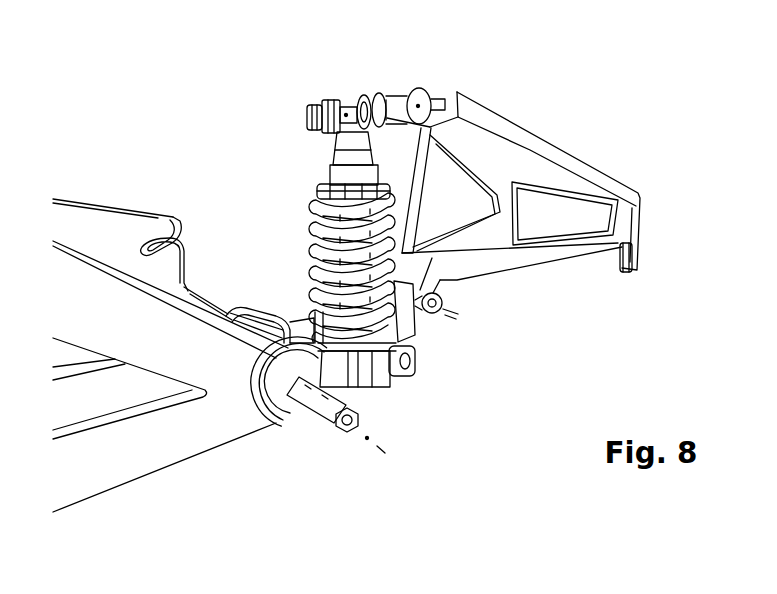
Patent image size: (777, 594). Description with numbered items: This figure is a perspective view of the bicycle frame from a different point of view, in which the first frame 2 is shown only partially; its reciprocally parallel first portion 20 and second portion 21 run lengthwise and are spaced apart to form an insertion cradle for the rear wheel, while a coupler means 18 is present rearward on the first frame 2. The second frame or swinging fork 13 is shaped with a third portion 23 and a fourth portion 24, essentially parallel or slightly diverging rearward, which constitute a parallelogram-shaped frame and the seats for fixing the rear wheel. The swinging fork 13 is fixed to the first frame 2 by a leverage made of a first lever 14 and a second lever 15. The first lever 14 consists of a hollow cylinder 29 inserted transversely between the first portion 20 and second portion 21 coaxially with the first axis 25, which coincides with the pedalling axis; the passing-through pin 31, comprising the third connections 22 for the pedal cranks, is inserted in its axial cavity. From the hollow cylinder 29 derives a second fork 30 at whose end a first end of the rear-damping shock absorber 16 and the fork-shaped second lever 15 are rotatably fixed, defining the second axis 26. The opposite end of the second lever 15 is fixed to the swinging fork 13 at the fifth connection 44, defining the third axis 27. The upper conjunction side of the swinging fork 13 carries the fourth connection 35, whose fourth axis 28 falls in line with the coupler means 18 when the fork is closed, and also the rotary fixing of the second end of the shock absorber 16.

The first frame 2 is at (343, 517).
The second frame or swinging fork 13 is at (564, 174).
The first lever 14 is at (273, 269).
The second lever 15 is at (413, 331).
The rear-damping shock absorber 16 is at (339, 192).
The coupler means 18 is at (145, 217).
The first portion 20 is at (224, 443).
The second portion 21 is at (74, 376).
The third connections 22 is at (343, 427).
The third portion 23 is at (604, 121).
The fourth portion 24 is at (481, 170).
The first axis 25 is at (385, 454).
The second axis 26 is at (428, 376).
The third axis 27 is at (463, 312).
The fourth axis 28 is at (287, 119).
The hollow cylinder 29 is at (271, 329).
The second fork 30 is at (347, 351).
The passing-through pin 31 is at (322, 418).
The fourth connection 35 is at (383, 95).
The fifth connection 44 is at (448, 293).